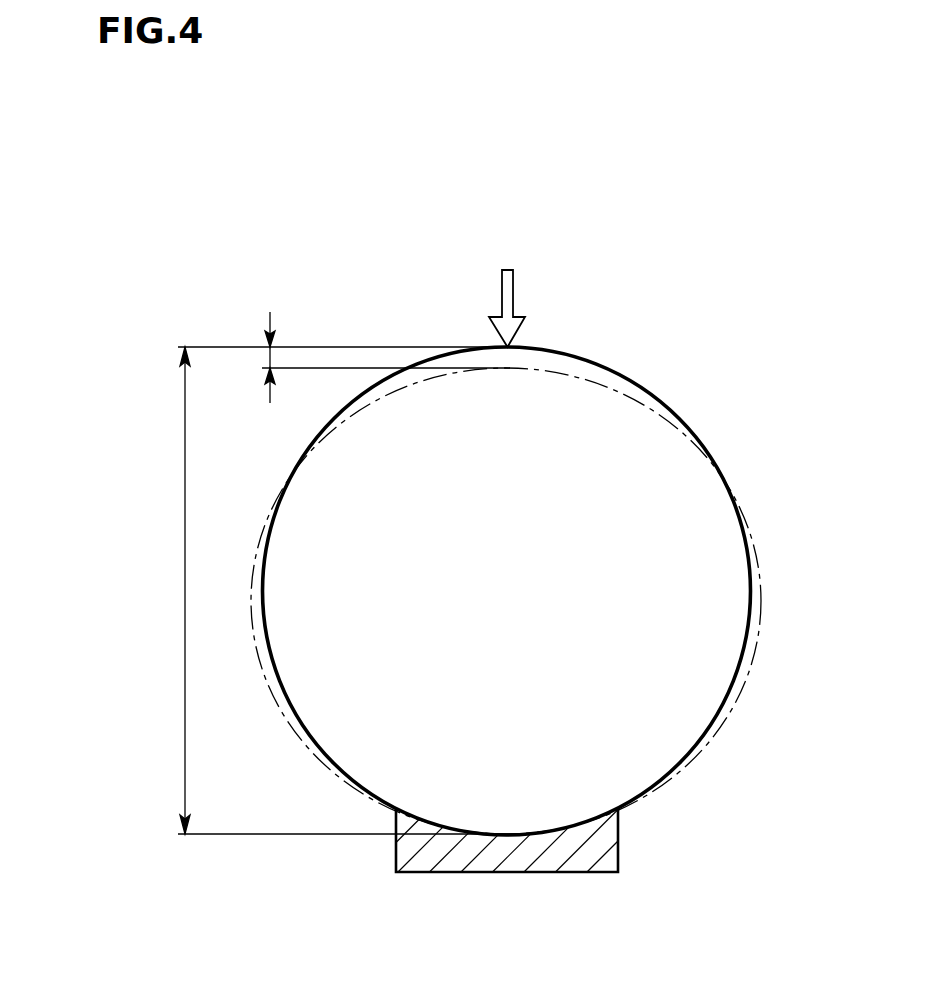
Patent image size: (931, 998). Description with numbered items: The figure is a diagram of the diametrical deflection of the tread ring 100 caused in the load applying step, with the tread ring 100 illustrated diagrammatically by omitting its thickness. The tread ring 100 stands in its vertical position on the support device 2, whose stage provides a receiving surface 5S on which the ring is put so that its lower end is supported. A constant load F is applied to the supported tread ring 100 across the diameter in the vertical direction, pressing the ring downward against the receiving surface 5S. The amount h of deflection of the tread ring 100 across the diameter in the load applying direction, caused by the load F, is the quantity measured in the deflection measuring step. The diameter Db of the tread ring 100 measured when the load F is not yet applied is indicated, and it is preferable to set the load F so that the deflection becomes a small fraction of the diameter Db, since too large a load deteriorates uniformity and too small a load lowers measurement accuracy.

The tread ring 100 is at (633, 380).
The support device 2 is at (619, 854).
The receiving surface 5S is at (547, 827).
The load F is at (514, 293).
The amount of deflection h is at (267, 357).
The diameter of the tread ring when the load is not yet applied Db is at (284, 590).